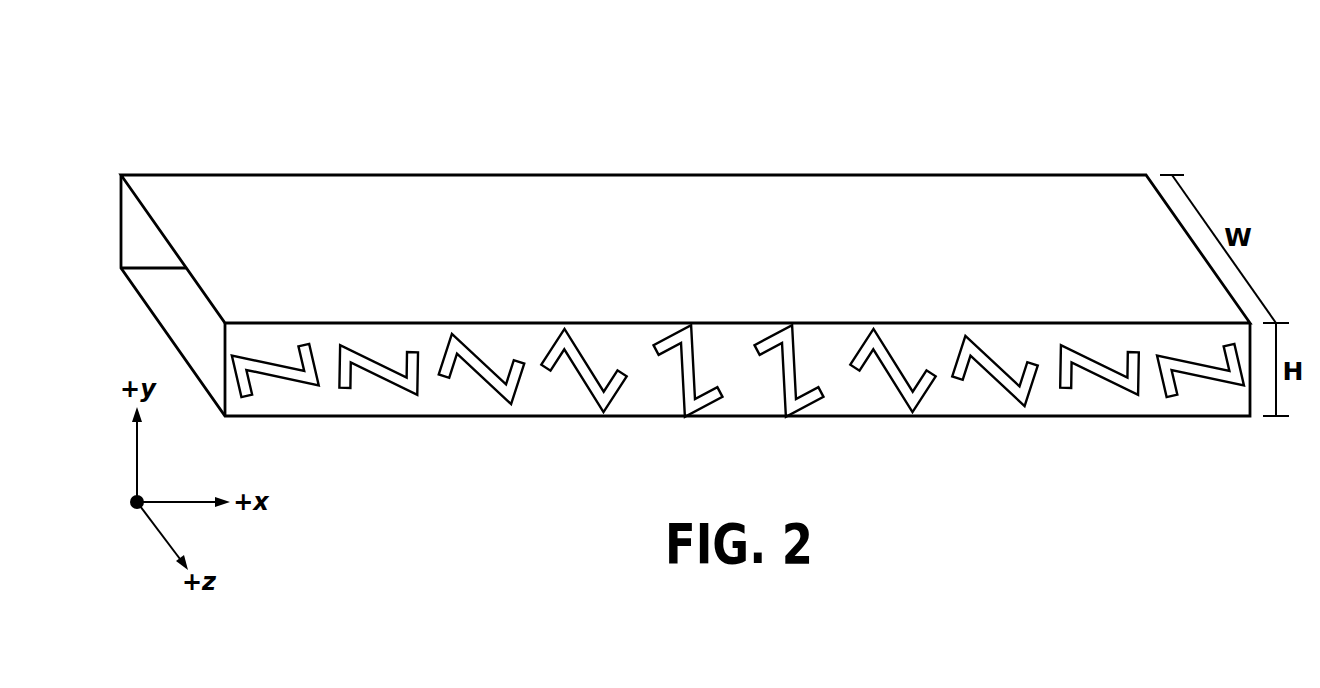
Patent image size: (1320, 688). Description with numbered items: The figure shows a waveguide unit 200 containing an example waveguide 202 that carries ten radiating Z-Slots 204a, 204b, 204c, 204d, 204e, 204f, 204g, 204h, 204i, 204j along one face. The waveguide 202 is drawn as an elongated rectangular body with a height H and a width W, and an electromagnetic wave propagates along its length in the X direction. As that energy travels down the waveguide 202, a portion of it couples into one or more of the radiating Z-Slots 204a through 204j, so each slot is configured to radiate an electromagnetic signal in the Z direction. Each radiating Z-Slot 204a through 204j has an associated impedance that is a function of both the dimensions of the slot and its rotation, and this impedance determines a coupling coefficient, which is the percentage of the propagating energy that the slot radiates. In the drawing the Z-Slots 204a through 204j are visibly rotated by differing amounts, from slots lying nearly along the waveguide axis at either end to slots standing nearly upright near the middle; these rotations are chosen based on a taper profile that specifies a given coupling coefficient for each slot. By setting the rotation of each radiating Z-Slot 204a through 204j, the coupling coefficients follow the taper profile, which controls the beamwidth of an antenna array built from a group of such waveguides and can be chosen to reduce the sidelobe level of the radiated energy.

The waveguide unit 200 is at (218, 82).
The waveguide 202 is at (490, 174).
The radiating Z-Slot 204a is at (244, 397).
The radiating Z-Slot 204b is at (405, 395).
The radiating Z-Slot 204c is at (498, 392).
The radiating Z-Slot 204d is at (588, 397).
The radiating Z-Slot 204e is at (715, 403).
The radiating Z-Slot 204f is at (817, 405).
The radiating Z-Slot 204g is at (902, 398).
The radiating Z-Slot 204h is at (1010, 393).
The radiating Z-Slot 204i is at (1123, 395).
The radiating Z-Slot 204j is at (1233, 380).